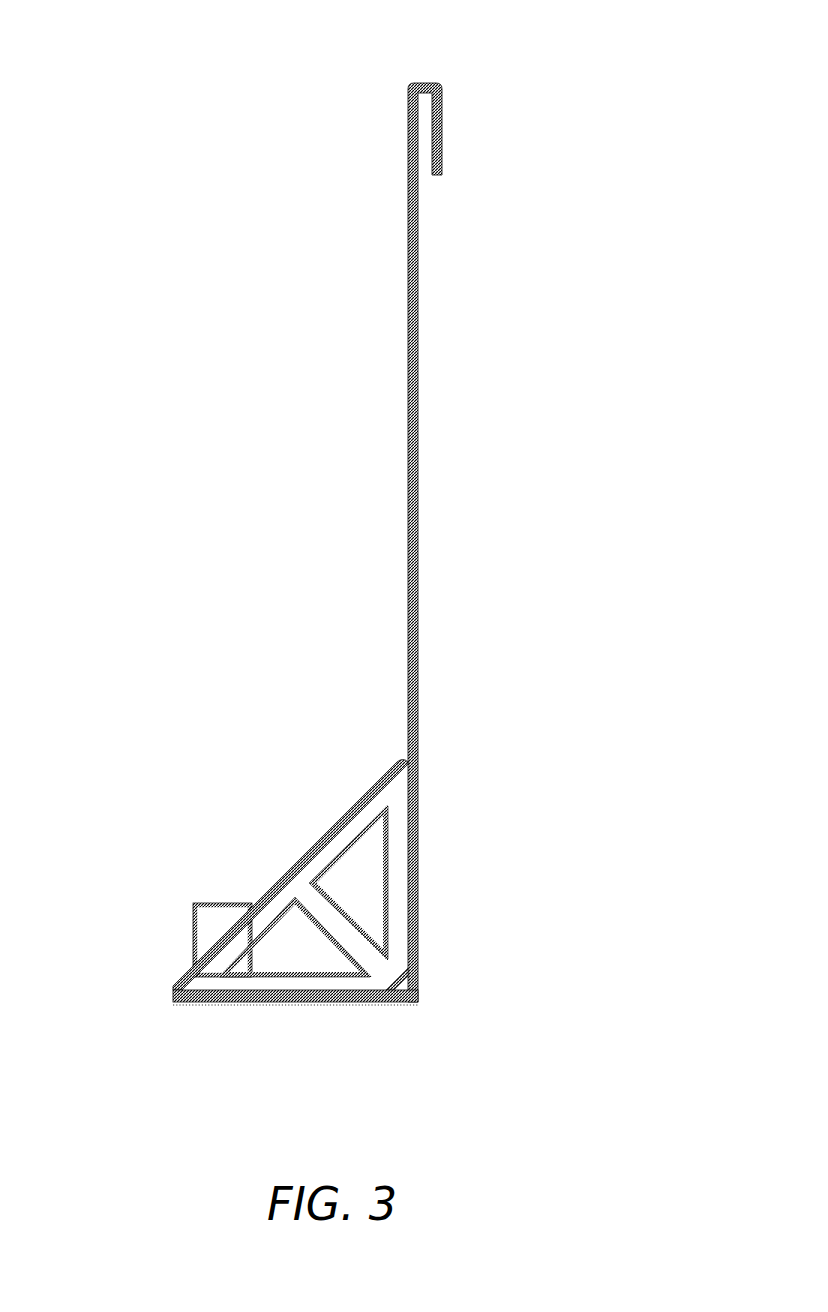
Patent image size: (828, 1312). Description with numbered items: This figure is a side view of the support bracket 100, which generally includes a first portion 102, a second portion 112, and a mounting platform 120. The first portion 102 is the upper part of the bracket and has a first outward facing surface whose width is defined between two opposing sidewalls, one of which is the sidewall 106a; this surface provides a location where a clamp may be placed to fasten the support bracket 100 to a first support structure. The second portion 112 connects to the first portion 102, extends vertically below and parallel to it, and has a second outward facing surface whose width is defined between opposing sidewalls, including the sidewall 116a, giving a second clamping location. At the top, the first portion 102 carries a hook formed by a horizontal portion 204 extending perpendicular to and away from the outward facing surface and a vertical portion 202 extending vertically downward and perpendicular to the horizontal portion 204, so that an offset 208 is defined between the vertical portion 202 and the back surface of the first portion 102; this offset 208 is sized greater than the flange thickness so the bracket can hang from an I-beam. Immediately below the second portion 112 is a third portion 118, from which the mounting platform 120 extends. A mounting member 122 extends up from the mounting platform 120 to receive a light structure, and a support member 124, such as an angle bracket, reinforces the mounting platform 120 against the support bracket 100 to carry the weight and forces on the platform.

The support bracket 100 is at (570, 73).
The first portion 102 is at (317, 103).
The sidewall 106a is at (412, 148).
The second portion 112 is at (503, 448).
The sidewall 116a is at (410, 393).
The third portion 118 is at (344, 926).
The mounting platform 120 is at (205, 1000).
The mounting member 122 is at (205, 927).
The support member 124 is at (326, 983).
The vertical portion 202 is at (441, 137).
The horizontal portion 204 is at (419, 82).
The offset 208 is at (428, 195).